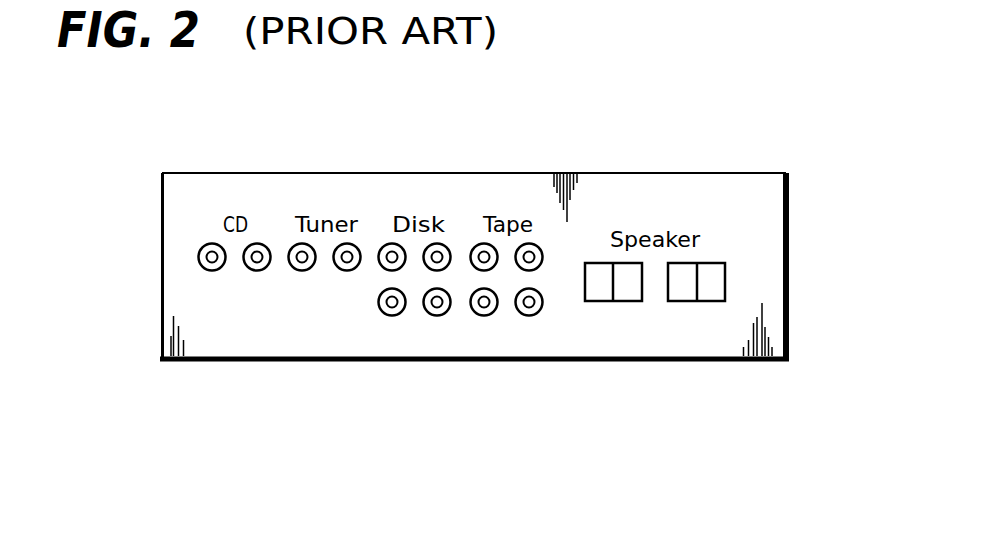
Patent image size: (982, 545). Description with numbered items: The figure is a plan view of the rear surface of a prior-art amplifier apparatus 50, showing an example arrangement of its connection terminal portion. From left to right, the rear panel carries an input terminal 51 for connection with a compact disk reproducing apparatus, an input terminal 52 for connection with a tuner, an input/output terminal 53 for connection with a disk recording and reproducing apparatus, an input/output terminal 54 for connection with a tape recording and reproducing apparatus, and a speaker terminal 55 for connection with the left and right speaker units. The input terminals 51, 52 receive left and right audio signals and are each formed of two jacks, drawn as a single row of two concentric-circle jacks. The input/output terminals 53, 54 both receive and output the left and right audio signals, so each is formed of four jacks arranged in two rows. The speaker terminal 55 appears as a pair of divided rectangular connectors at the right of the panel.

The amplifier apparatus 50 is at (789, 227).
The input terminal 51 is at (232, 282).
The input terminal 52 is at (323, 282).
The input/output terminal 53 is at (419, 317).
The input/output terminal 54 is at (503, 317).
The speaker terminal 55 is at (682, 303).